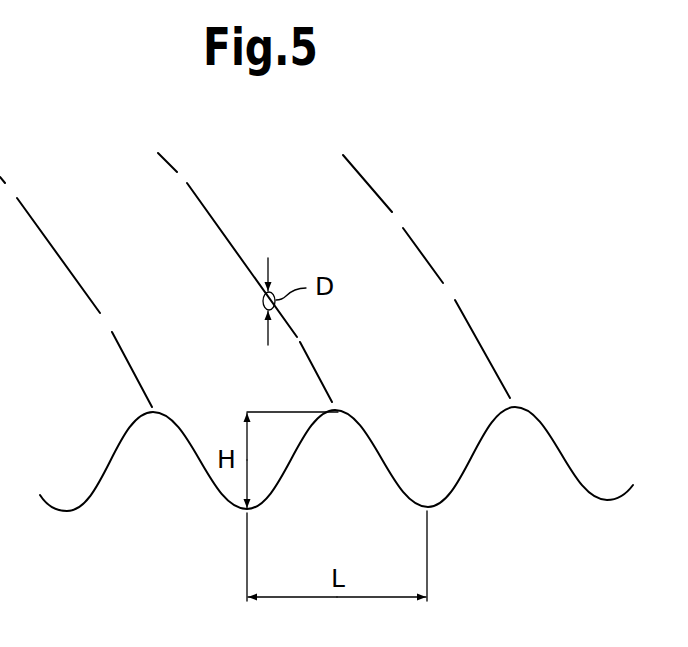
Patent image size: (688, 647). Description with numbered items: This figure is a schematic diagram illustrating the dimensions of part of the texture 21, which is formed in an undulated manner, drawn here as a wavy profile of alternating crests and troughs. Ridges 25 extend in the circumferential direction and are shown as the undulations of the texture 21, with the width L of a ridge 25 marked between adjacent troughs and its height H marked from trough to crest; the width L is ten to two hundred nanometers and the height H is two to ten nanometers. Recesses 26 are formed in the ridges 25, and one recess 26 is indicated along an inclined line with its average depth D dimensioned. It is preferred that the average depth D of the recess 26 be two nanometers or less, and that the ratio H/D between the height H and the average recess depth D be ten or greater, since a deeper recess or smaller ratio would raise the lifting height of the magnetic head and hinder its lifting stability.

The texture 21 is at (358, 421).
The ridge 25 is at (425, 255).
The recess 26 is at (262, 294).